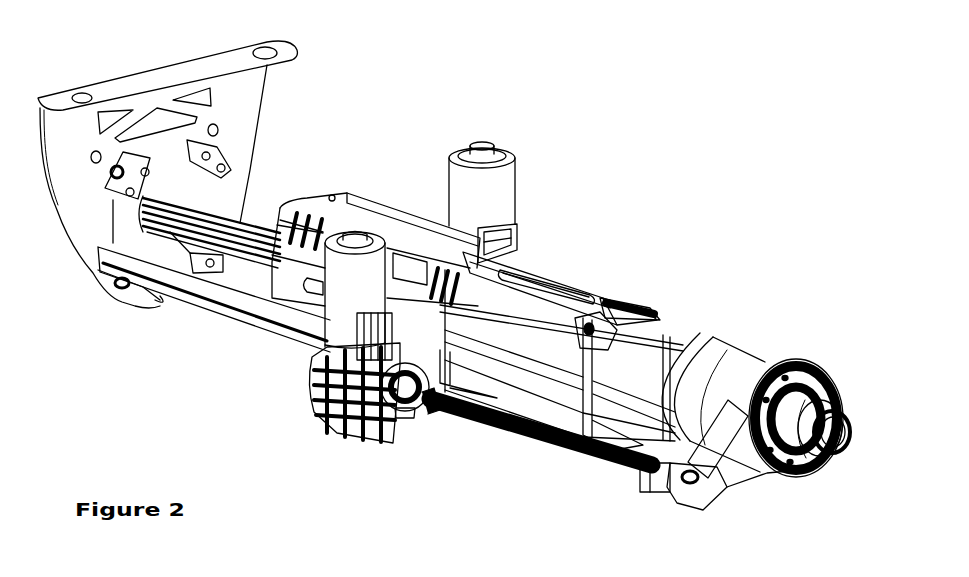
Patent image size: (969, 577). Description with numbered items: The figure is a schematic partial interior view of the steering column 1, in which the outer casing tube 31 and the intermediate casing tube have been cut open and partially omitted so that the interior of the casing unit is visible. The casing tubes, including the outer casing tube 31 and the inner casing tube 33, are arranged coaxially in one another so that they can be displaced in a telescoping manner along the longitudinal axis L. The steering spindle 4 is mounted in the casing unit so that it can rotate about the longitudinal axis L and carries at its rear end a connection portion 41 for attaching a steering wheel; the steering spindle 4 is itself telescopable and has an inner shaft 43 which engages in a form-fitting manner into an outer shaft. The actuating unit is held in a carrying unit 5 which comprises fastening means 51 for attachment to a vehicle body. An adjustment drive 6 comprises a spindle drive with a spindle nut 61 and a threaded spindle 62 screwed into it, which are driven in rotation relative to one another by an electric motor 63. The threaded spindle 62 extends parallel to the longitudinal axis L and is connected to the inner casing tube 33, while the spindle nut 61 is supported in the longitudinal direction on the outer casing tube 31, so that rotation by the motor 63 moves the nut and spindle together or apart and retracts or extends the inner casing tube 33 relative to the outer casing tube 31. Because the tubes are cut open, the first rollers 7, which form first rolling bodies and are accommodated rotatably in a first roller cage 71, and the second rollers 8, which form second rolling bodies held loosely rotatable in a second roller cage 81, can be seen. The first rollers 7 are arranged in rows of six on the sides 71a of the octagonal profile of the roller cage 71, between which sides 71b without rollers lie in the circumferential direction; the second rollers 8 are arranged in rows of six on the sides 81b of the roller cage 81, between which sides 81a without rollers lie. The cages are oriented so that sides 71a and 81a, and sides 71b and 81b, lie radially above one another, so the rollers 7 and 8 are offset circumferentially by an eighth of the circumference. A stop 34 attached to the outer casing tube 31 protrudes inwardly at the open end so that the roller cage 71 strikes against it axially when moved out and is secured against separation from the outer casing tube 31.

The steering column 1 is at (663, 163).
The steering spindle 4 is at (830, 377).
The connection portion 41 is at (840, 410).
The carrying unit 5 is at (63, 155).
The fastening means 51 is at (82, 90).
The adjustment drive 6 is at (337, 440).
The spindle nut 61 is at (403, 433).
The threaded spindle 62 is at (573, 460).
The electric motor 63 is at (345, 295).
The first rollers 7 is at (285, 217).
The first roller cage 71 is at (365, 206).
The sides with rollers of first roller cage 71a is at (330, 220).
The sides without rollers of first roller cage 71b is at (387, 218).
The second rollers 8 is at (603, 336).
The second roller cage 81 is at (497, 293).
The sides without rollers of second roller cage 81a is at (530, 307).
The sides with rollers of second roller cage 81b is at (577, 290).
The outer casing tube 31 is at (242, 320).
The inner casing tube 33 is at (688, 337).
The stop 34 is at (507, 253).
The inner shaft 43 is at (230, 257).
The longitudinal axis L is at (880, 445).